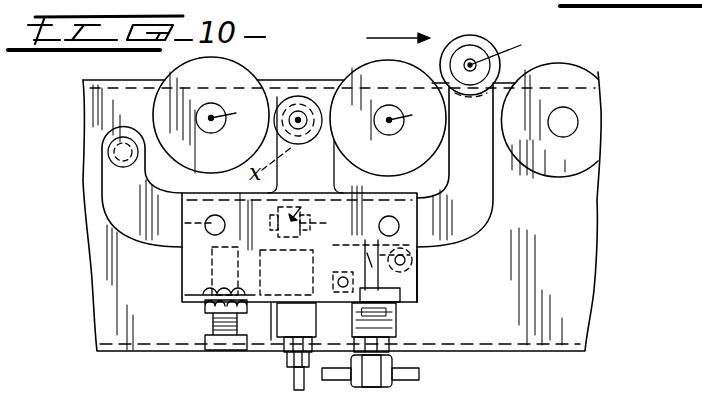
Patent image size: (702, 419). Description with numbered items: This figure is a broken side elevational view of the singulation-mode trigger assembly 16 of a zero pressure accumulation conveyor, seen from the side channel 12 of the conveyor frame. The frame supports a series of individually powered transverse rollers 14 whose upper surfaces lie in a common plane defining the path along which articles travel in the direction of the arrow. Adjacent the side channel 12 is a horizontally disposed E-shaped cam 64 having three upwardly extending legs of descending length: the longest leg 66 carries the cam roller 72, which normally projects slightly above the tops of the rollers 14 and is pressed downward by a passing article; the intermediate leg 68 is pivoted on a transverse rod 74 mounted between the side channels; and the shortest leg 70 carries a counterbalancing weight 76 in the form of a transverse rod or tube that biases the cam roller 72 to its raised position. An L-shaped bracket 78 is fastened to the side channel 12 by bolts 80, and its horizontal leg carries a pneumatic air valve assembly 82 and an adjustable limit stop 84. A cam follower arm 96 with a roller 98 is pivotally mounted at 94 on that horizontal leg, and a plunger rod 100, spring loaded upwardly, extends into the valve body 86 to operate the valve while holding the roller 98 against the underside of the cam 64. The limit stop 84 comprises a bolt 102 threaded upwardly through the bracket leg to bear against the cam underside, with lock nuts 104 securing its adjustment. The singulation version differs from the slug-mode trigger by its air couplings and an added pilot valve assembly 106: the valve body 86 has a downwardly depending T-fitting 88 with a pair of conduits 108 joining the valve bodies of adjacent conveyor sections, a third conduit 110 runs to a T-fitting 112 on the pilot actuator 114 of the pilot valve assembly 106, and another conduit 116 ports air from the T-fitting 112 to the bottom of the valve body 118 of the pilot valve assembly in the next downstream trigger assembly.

The side channel 12 is at (578, 230).
The transverse roller 14 is at (352, 63).
The trigger assembly 16 is at (427, 272).
The E-shaped cam 64 is at (482, 213).
The longest leg 66 is at (481, 162).
The intermediate leg 68 is at (388, 118).
The shortest leg 70 is at (120, 173).
The cam roller 72 is at (491, 42).
The rod 74 is at (327, 70).
The counterbalancing weight 76 is at (100, 143).
The L-shaped bracket 78 is at (182, 280).
The bolt 80 is at (205, 225).
The pneumatic air valve assembly 82 is at (402, 330).
The adjustable limit stop 84 is at (197, 313).
The valve body 86 is at (400, 357).
The T-fitting 88 is at (381, 372).
The pivot 94 is at (360, 272).
The cam follower arm 96 is at (383, 247).
The roller 98 is at (420, 253).
The plunger rod 100 is at (421, 303).
The bolt 102 is at (182, 258).
The lock nut 104 is at (197, 308).
The pilot valve assembly 106 is at (270, 322).
The conduit 108 is at (352, 376).
The third conduit 110 is at (362, 186).
The T-fitting 112 is at (312, 192).
The pilot actuator 114 is at (228, 285).
The conduit 116 is at (268, 196).
The valve body 118 is at (298, 335).